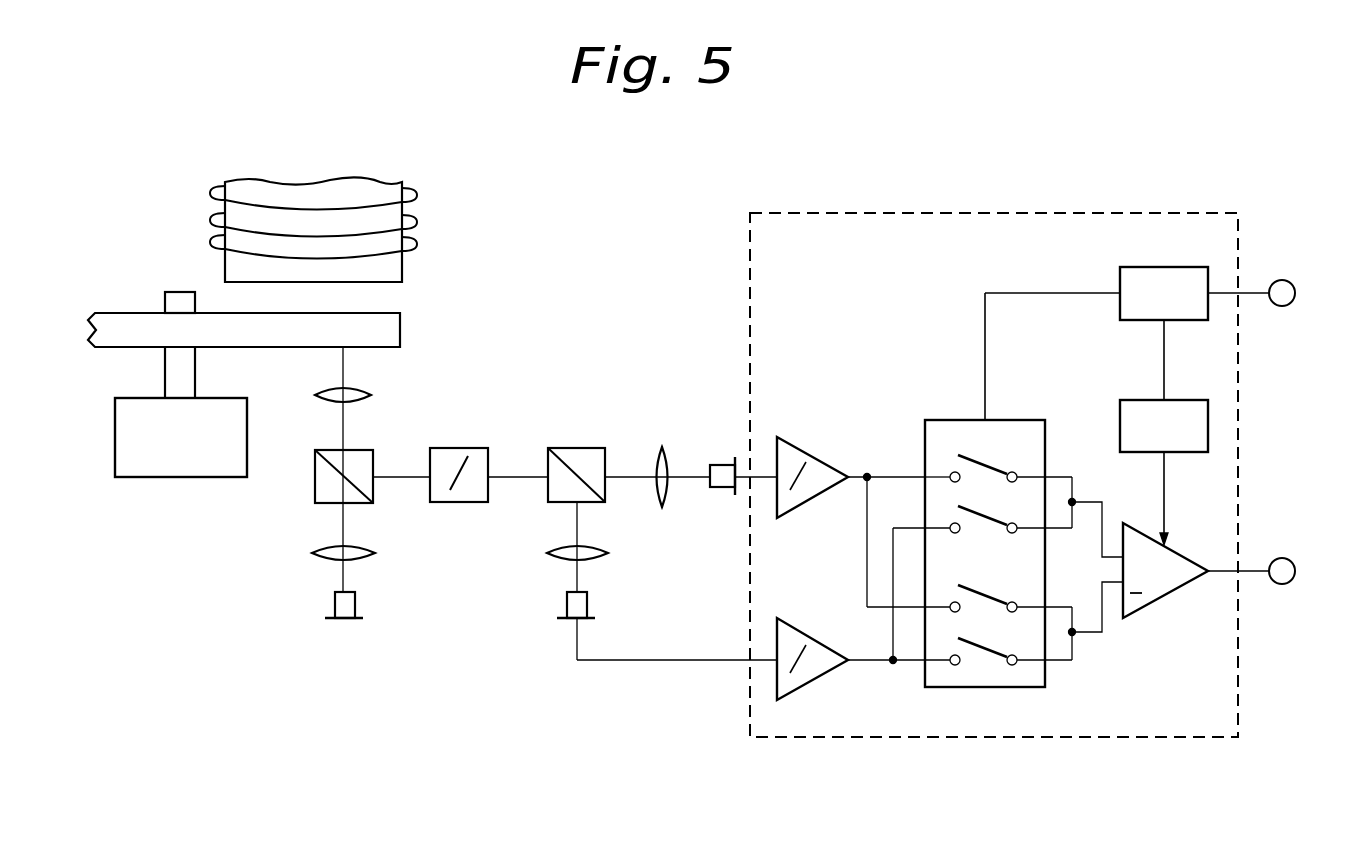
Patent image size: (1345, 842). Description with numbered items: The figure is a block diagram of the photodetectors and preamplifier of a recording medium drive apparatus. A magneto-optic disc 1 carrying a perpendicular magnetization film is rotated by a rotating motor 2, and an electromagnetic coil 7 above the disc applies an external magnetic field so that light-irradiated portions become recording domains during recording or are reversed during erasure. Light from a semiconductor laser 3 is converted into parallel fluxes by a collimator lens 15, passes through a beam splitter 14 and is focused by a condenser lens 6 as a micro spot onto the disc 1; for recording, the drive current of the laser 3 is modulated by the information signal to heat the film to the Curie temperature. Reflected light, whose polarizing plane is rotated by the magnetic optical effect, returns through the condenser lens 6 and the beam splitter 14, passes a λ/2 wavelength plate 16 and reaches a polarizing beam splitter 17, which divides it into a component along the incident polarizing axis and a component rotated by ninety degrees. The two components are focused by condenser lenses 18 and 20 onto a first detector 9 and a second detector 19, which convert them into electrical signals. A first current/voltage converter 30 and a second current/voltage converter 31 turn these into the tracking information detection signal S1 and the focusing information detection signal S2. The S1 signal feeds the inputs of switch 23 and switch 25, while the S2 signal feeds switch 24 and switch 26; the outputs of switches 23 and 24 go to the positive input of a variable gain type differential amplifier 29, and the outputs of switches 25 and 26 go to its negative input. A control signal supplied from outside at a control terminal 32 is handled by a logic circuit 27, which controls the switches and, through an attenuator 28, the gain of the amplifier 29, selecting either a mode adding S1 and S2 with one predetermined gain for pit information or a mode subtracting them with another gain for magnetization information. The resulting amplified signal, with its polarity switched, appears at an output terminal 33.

The magneto-optic disc 1 is at (400, 327).
The rotating motor 2 is at (178, 477).
The semiconductor laser 3 is at (355, 605).
The condenser lens 6 is at (371, 394).
The electromagnetic coil 7 is at (417, 228).
The first detector 9 is at (722, 465).
The beam splitter 14 is at (315, 496).
The collimator lens 15 is at (375, 550).
The λ/2 wavelength plate 16 is at (466, 448).
The polarizing beam splitter 17 is at (577, 448).
The condenser lens 18 is at (608, 551).
The second detector 19 is at (587, 605).
The condenser lens 20 is at (662, 447).
The switch (1) 23 is at (1014, 455).
The switch (2) 24 is at (1014, 509).
The switch (3) 25 is at (1014, 587).
The switch (4) 26 is at (1014, 641).
The logic circuit 27 is at (1120, 268).
The attenuator 28 is at (1120, 402).
The variable gain type differential amplifier 29 is at (1160, 600).
The first current/voltage converter 30 is at (808, 437).
The second current/voltage converter 31 is at (808, 618).
The control terminal 32 is at (1282, 280).
The output terminal 33 is at (1282, 558).